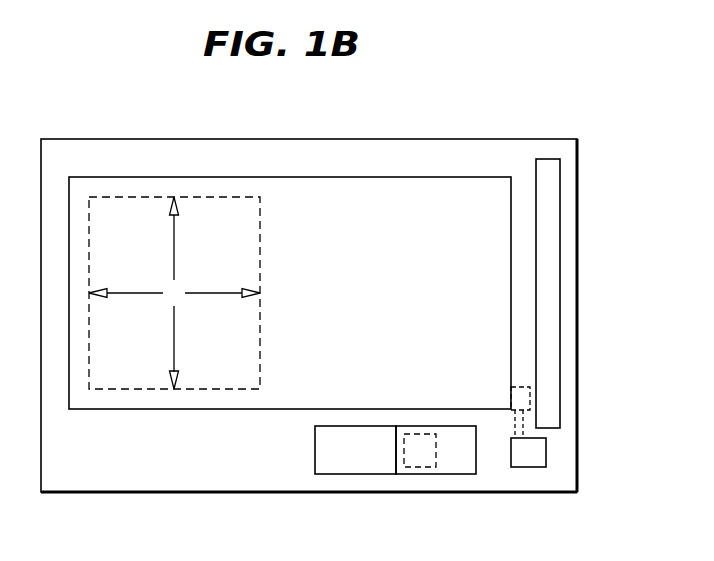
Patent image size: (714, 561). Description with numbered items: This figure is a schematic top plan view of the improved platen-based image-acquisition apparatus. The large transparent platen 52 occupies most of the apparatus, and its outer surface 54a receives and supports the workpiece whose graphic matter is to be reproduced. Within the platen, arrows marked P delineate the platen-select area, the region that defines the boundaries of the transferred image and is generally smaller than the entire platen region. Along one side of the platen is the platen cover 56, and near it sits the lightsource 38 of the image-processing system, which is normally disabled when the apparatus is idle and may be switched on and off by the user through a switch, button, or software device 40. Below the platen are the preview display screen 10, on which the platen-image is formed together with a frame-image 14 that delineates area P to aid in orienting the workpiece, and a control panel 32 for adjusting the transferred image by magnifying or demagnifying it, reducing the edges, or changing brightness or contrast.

The preview display screen 10 is at (450, 467).
The frame-image 14 is at (418, 468).
The control panel 32 is at (353, 467).
The lightsource 38 is at (530, 397).
The switch, button, or software device 40 is at (546, 450).
The transparent platen 52 is at (400, 210).
The outer surface 54a is at (310, 212).
The platen cover 56 is at (560, 221).